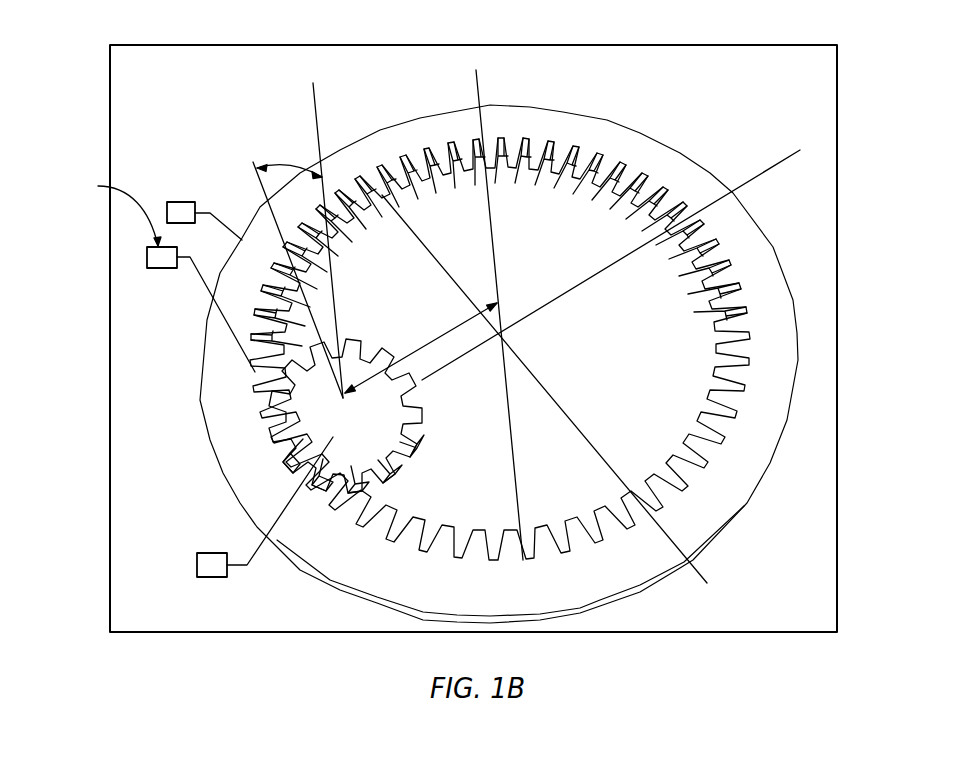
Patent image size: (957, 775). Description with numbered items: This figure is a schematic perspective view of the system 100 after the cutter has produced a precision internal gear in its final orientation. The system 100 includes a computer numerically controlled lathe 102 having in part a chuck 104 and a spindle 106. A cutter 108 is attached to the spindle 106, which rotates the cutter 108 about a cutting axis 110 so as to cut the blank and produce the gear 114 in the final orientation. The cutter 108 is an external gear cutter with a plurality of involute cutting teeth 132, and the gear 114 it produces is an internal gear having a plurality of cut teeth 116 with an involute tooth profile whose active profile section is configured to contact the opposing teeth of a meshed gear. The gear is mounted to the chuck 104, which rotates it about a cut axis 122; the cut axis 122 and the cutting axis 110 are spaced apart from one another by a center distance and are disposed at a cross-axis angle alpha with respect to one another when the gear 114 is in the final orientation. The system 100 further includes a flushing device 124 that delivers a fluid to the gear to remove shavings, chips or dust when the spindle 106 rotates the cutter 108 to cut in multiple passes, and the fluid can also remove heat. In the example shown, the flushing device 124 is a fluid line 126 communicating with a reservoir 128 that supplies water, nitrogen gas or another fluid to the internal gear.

The system 100 is at (95, 107).
The computer numerically controlled (CNC) lathe 102 is at (110, 152).
The chuck 104 is at (174, 202).
The spindle 106 is at (197, 565).
The cutter 108 is at (320, 432).
The cutting axis 110 is at (258, 186).
The gear in the final orientation 114 is at (200, 403).
The cut teeth 116 is at (380, 190).
The cut axis 122 is at (500, 314).
The flushing device 124 is at (114, 209).
The fluid line 126 is at (200, 275).
The reservoir 128 is at (147, 257).
The involute cutting teeth 132 is at (375, 458).